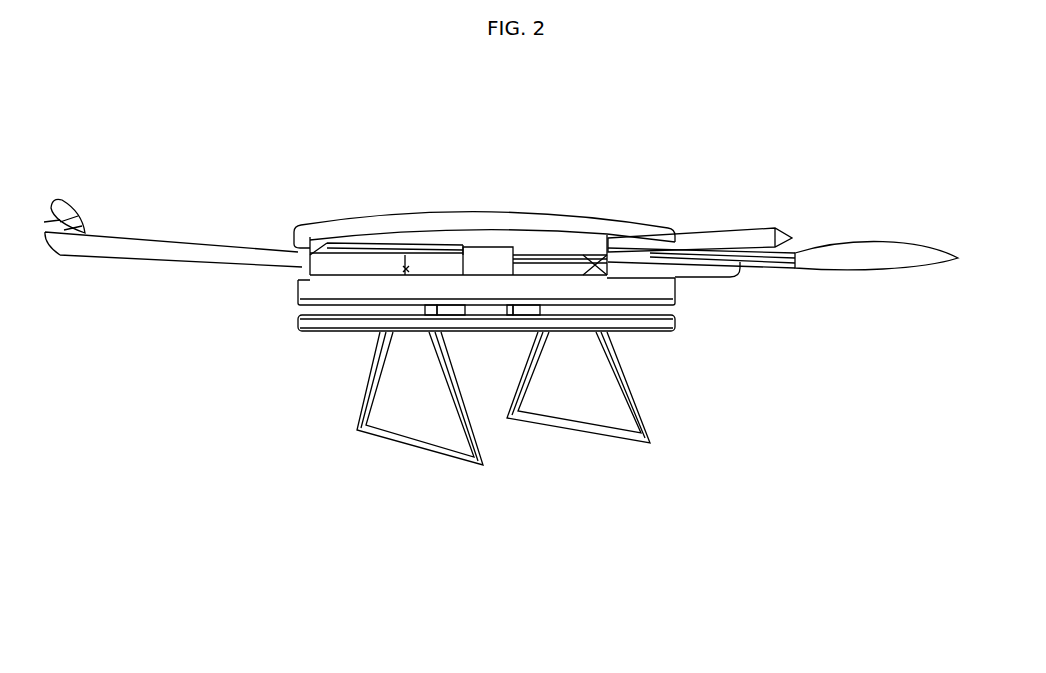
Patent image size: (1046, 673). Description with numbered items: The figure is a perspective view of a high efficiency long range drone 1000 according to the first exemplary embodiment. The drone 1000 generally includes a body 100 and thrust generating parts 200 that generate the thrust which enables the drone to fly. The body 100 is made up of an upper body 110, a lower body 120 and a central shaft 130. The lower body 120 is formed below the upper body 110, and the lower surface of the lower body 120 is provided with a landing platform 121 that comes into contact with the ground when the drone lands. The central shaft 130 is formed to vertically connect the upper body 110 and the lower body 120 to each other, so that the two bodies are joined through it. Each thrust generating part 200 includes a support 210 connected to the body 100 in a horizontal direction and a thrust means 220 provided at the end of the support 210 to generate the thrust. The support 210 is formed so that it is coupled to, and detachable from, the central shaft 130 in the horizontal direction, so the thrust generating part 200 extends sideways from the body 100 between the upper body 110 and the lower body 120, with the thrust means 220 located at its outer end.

The high efficiency long range drone 1000 is at (547, 192).
The body 100 is at (93, 510).
The upper body 110 is at (360, 287).
The lower body 120 is at (420, 323).
The landing platform 121 is at (475, 458).
The central shaft 130 is at (490, 310).
The thrust generating part 200 is at (940, 447).
The support 210 is at (607, 277).
The thrust means 220 is at (775, 258).